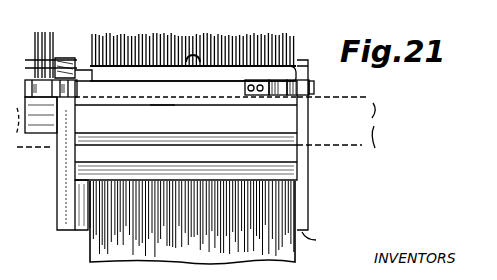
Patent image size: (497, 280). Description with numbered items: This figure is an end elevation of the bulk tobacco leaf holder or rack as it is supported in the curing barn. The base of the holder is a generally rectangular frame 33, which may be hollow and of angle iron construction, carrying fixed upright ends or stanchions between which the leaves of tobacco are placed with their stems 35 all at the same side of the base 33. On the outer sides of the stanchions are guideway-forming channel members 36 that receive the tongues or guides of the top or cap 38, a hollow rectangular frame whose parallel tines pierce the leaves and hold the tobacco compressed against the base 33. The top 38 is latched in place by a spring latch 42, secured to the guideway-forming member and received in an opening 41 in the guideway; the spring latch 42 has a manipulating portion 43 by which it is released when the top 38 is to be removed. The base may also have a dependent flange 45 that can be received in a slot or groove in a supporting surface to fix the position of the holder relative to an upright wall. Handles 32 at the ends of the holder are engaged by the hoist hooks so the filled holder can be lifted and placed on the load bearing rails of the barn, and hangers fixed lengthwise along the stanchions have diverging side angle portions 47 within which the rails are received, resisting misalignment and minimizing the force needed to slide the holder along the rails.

The handles 32 is at (193, 68).
The rectangular frame 33 is at (84, 233).
The stems 35 is at (173, 35).
The guideway-forming channel members 36 is at (133, 79).
The top or cap 38 is at (308, 236).
The opening 41 is at (263, 96).
The spring latch 42 is at (277, 96).
The manipulating portion 43 is at (313, 87).
The dependent flange 45 is at (67, 60).
The diverging side angle portions 47 is at (160, 105).